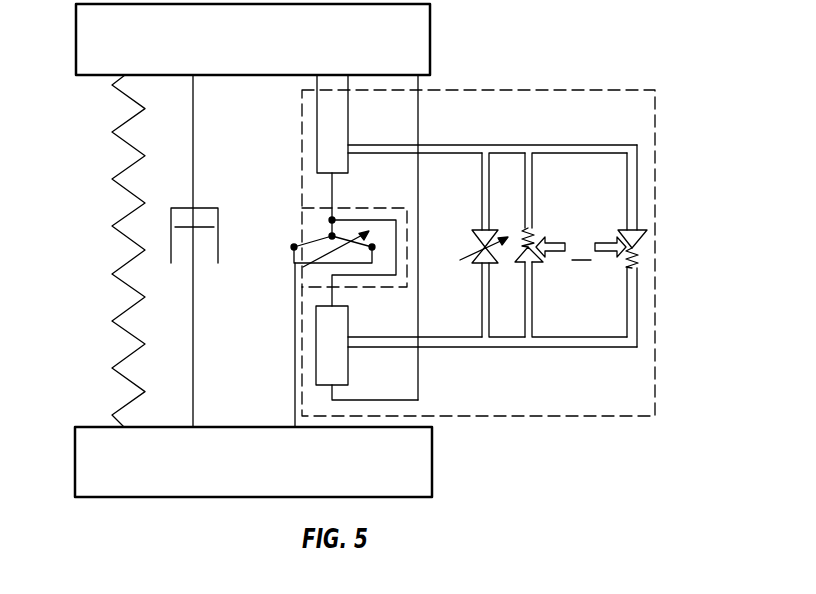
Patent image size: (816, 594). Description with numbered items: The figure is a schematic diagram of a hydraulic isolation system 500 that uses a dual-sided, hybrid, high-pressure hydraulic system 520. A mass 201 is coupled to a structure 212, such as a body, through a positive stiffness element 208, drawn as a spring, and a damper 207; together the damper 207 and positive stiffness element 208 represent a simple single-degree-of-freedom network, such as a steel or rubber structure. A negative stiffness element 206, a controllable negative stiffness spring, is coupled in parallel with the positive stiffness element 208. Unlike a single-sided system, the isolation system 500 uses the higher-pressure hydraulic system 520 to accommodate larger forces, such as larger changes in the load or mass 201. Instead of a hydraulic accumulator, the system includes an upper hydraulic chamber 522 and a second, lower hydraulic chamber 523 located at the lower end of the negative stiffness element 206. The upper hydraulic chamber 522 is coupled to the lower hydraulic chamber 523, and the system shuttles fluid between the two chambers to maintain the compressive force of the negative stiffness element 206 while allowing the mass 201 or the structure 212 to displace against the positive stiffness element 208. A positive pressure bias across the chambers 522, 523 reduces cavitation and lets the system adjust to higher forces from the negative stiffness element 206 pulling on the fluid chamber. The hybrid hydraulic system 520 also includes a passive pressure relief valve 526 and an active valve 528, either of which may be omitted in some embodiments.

The mass 201 is at (268, 61).
The structure 212 is at (267, 483).
The damper 207 is at (202, 207).
The positive stiffness element 208 is at (130, 260).
The negative stiffness element 206 is at (326, 235).
The hydraulic isolation system 500 is at (672, 51).
The high-pressure hydraulic system 520 is at (492, 419).
The upper hydraulic chamber 522 is at (350, 161).
The lower hydraulic chamber 523 is at (348, 334).
The passive pressure relief valve 526 is at (637, 138).
The active valve 528 is at (483, 248).